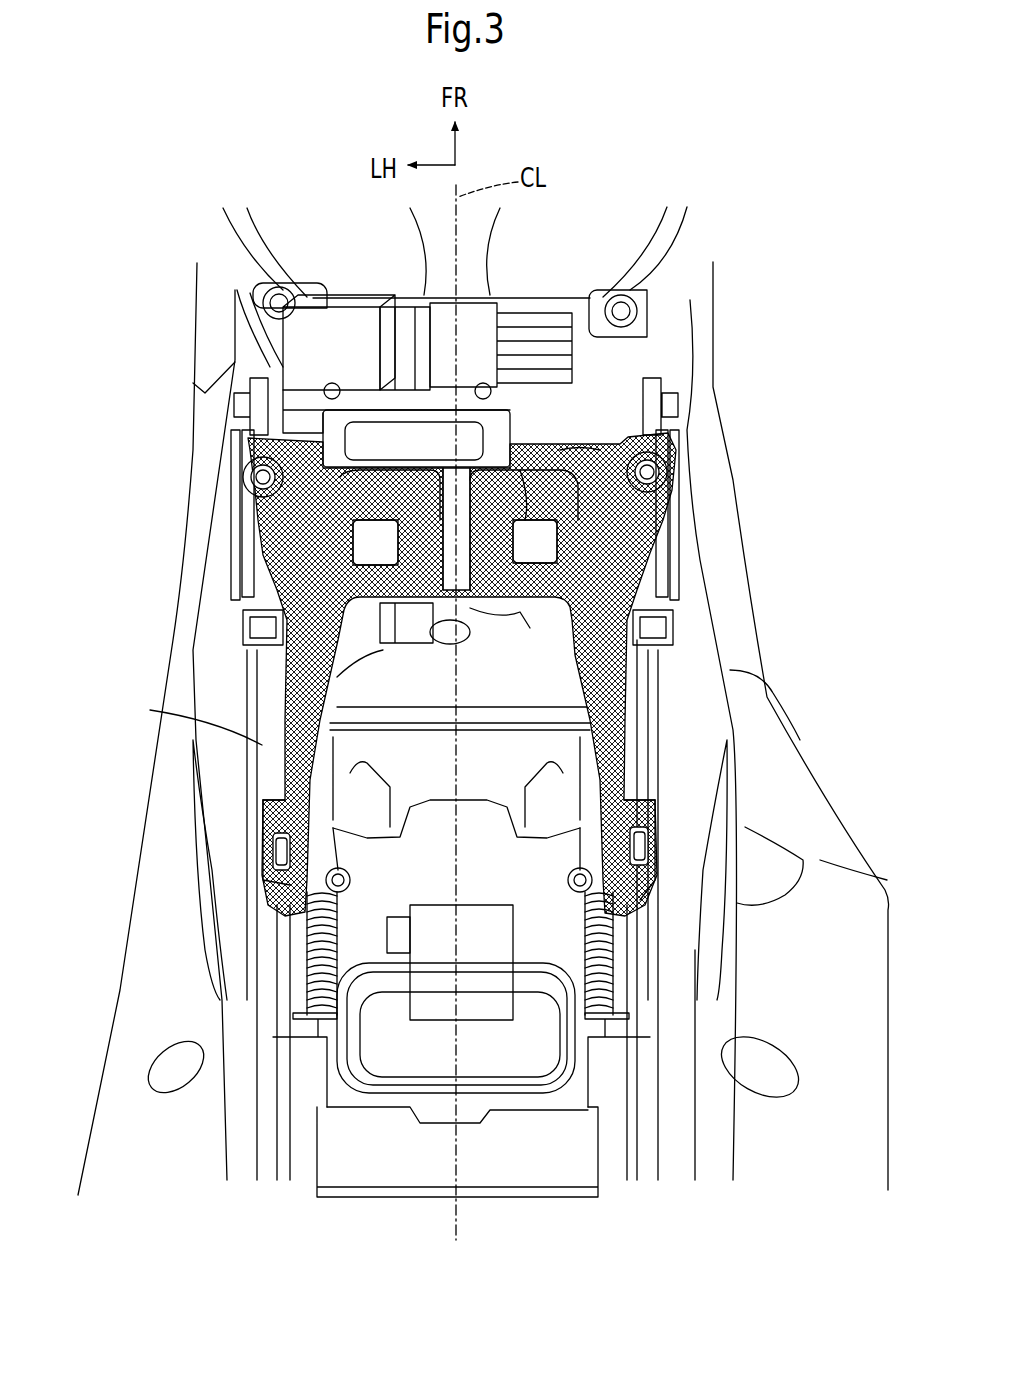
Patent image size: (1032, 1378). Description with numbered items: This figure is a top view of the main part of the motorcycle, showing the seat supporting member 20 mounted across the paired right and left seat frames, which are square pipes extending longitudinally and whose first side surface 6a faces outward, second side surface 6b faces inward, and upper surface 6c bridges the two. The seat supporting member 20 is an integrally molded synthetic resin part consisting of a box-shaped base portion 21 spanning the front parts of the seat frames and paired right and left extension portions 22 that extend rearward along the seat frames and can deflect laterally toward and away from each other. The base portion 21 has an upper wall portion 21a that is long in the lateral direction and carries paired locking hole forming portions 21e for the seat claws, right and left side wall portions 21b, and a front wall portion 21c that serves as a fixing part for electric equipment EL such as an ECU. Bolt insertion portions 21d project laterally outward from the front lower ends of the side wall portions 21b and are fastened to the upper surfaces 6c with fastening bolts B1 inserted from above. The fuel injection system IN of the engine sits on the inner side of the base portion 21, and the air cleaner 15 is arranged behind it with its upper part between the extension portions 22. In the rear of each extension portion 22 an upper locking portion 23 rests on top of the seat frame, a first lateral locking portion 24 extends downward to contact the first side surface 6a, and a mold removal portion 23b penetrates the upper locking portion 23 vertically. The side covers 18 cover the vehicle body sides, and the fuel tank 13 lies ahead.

The fuel tank 13 is at (638, 230).
The air cleaner 15 is at (550, 935).
The side covers 18 is at (207, 613).
The seat supporting member 20 is at (470, 639).
The base portion 21 is at (658, 436).
The upper wall portion 21a is at (535, 460).
The side wall portions 21b is at (300, 530).
The front wall portion 21c is at (575, 440).
The bolt insertion portions 21d is at (243, 475).
The locking hole forming portions 21e is at (300, 530).
The extension portions 22 is at (277, 682).
The upper locking portion 23 is at (262, 808).
The mold removal portion 23b is at (262, 845).
The first lateral locking portion 24 is at (275, 852).
The first side surface 6a is at (262, 773).
The second side surface 6b is at (337, 755).
The upper surface 6c is at (265, 745).
The fastening bolts B1 is at (243, 452).
The electric equipment EL is at (305, 380).
The fuel injection system IN is at (450, 642).